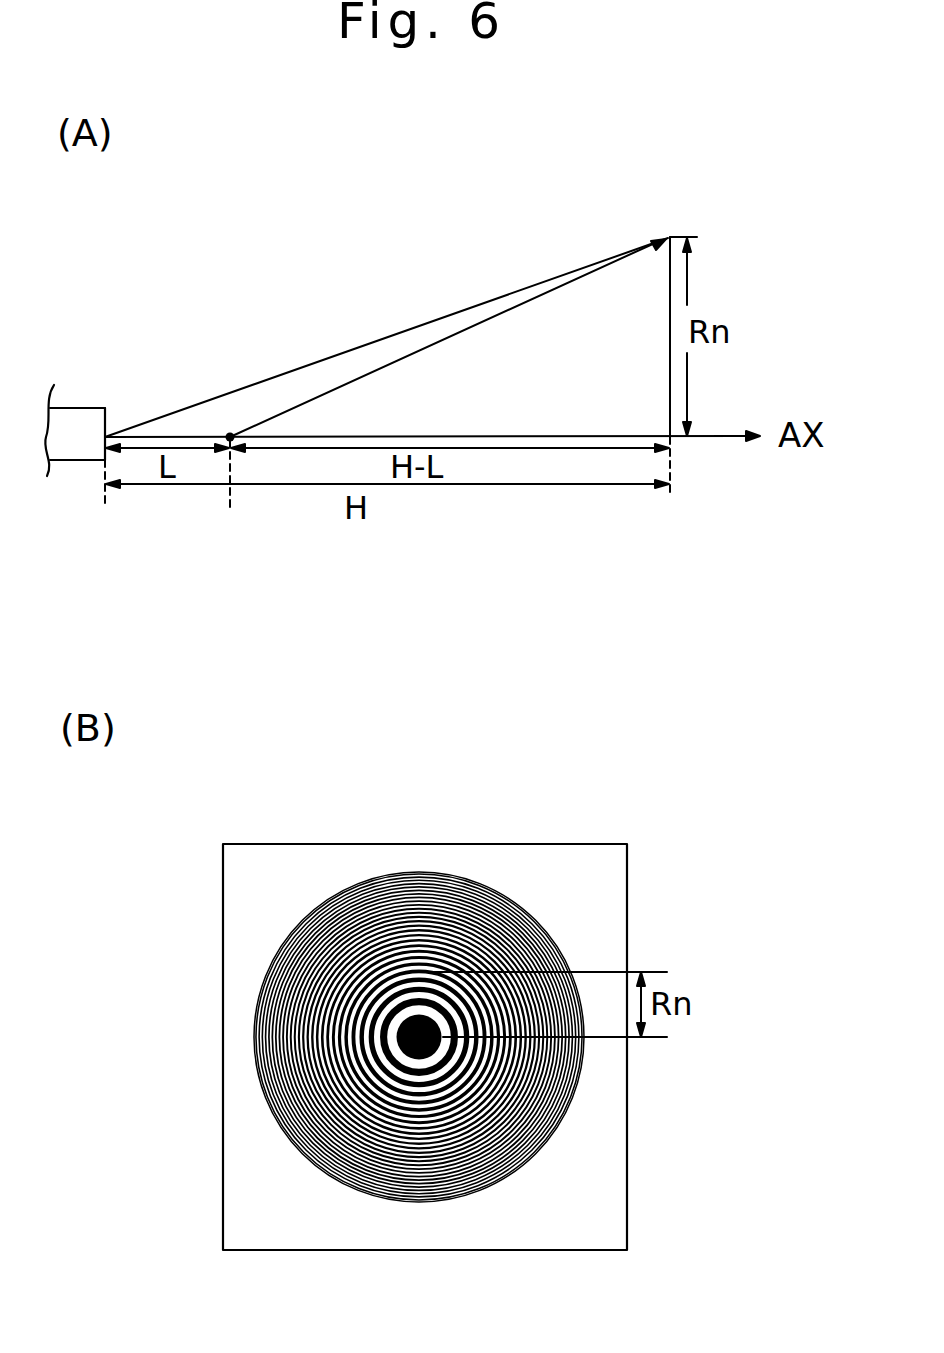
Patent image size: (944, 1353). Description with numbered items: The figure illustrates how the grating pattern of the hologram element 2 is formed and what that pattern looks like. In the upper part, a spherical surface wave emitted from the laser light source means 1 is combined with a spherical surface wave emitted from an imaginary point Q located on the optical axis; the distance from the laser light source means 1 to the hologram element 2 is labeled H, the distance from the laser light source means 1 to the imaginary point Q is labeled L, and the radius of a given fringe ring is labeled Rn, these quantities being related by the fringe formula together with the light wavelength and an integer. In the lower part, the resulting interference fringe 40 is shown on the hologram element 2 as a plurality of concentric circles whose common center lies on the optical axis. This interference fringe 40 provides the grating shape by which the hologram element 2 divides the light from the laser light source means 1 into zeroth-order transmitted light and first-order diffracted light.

The laser light source means 1 is at (77, 418).
The imaginary point Q is at (230, 436).
The hologram element 2 is at (411, 843).
The interference fringe 40 is at (254, 1042).